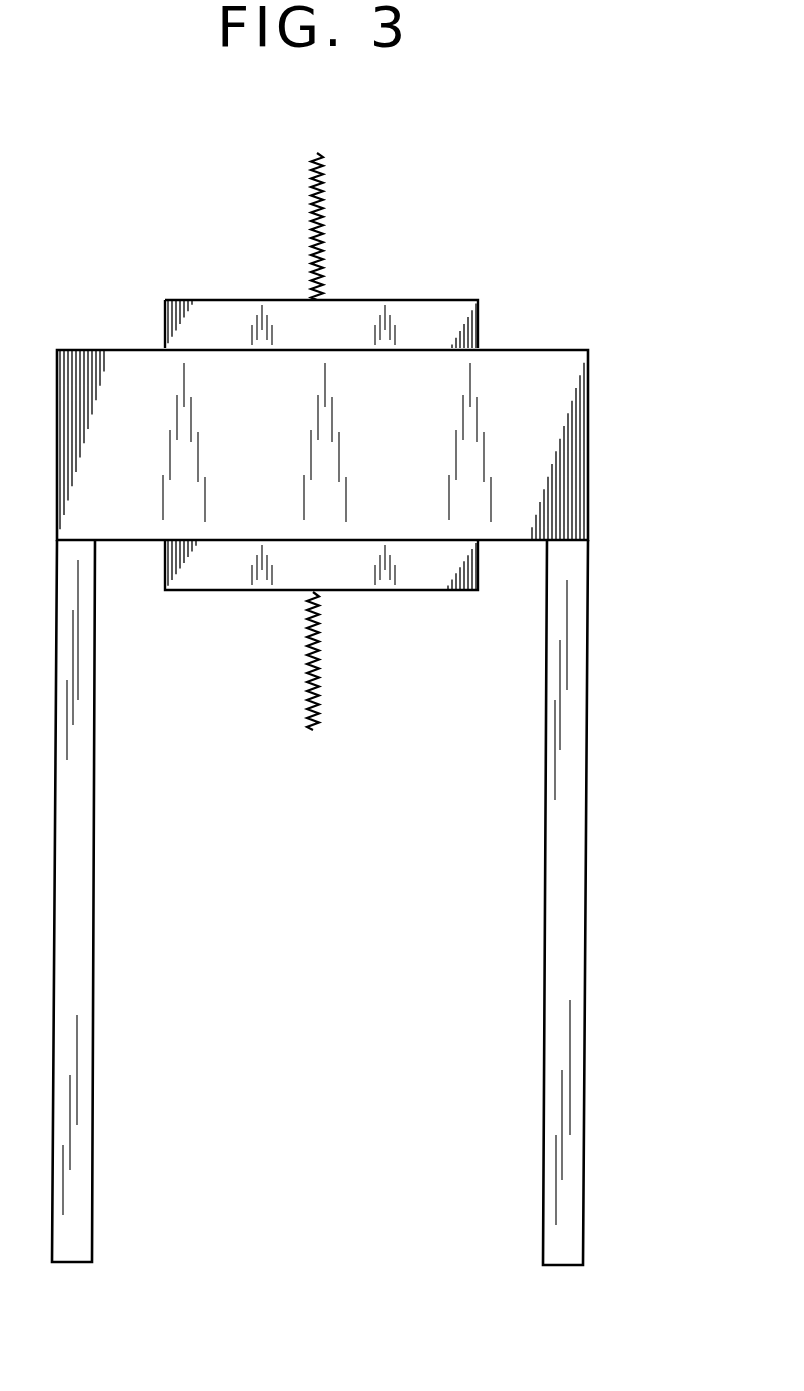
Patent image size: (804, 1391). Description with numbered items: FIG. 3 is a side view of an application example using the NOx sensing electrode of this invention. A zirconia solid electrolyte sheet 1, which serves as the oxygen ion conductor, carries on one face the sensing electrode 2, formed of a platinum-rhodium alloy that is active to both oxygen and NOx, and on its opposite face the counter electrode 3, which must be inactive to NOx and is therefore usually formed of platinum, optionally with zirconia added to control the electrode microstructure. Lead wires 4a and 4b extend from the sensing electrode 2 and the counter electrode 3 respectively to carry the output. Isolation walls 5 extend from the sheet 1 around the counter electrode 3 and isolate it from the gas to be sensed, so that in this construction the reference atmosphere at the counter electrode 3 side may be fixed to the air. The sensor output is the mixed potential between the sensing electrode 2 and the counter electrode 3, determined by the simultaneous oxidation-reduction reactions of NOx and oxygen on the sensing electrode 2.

The zirconia green sheet 1 is at (582, 462).
The sensing electrode 2 is at (210, 302).
The counter electrode 3 is at (437, 592).
The lead wire 4a is at (320, 192).
The lead wire 4b is at (313, 705).
The isolation walls 5 is at (92, 1015).